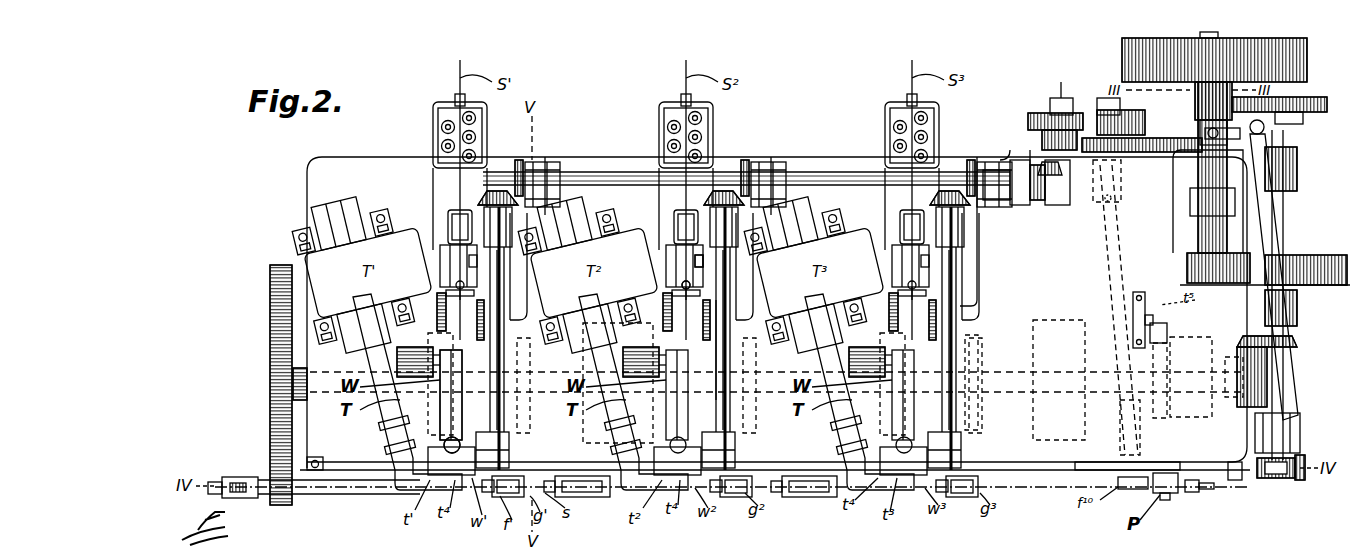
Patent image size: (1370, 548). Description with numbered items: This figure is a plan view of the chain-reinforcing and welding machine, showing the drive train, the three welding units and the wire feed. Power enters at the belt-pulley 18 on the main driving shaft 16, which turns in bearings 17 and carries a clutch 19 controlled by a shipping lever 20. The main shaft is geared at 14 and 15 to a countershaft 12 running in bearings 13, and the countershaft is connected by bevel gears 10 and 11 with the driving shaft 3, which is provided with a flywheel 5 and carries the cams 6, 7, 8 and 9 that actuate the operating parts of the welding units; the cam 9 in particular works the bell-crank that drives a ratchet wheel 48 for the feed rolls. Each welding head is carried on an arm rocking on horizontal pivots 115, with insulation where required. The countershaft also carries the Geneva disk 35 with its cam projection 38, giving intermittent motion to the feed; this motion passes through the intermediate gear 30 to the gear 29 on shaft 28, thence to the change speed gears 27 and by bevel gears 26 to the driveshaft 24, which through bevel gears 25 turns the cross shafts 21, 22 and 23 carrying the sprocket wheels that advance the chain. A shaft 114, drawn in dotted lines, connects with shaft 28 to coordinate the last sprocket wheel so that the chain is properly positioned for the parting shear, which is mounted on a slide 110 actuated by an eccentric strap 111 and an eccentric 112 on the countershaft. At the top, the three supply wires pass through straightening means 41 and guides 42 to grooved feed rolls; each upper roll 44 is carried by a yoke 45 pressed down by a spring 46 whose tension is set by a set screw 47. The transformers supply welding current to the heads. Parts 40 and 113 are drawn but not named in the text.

The driving shaft 3 is at (300, 370).
The flywheel 5 is at (270, 384).
The cam 6 is at (585, 412).
The cam 7 is at (440, 400).
The cam 8 is at (462, 443).
The cam 9 is at (522, 433).
The bevel gear 10 is at (1255, 378).
The bevel gear 11 is at (1290, 346).
The countershaft 12 is at (1290, 207).
The bearings 13 is at (1297, 172).
The gear 14 is at (1330, 255).
The gear 15 is at (1187, 266).
The main driving shaft 16 is at (1205, 200).
The bearings 17 is at (1205, 170).
The belt-pulley 18 is at (1300, 62).
The clutch 19 is at (1195, 110).
The shipping lever 20 is at (1292, 398).
The cross shaft 21 is at (506, 330).
The cross-shaft 22 is at (730, 326).
The cross shaft 23 is at (955, 322).
The driveshaft 24 is at (790, 172).
The bevel gears 25 is at (487, 193).
The bevel gears 26 is at (1045, 190).
The change speed gears 27 is at (1083, 112).
The shaft 28 is at (1118, 186).
The gear 29 is at (1110, 140).
The intermediate gear 30 is at (1150, 148).
The Geneva disk 35 is at (1330, 90).
The cam projection 38 is at (1303, 124).
The cam 40 is at (1196, 337).
The straightening means 41 is at (433, 128).
The guides 42 is at (448, 212).
The upper roll 44 is at (440, 320).
The yoke 45 is at (668, 262).
The spring 46 is at (676, 292).
The set screw 47 is at (680, 284).
The ratchet wheel 48 is at (716, 335).
The slide 110 is at (1236, 480).
The eccentric strap 111 is at (1302, 480).
The eccentric 112 is at (1285, 478).
The plate 113 is at (1105, 462).
The shaft 114 is at (1108, 262).
The horizontal pivots 115 is at (397, 360).